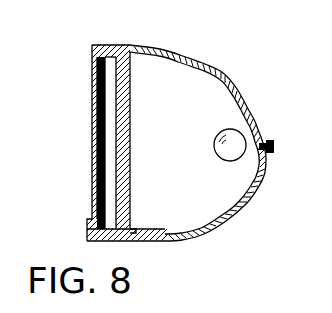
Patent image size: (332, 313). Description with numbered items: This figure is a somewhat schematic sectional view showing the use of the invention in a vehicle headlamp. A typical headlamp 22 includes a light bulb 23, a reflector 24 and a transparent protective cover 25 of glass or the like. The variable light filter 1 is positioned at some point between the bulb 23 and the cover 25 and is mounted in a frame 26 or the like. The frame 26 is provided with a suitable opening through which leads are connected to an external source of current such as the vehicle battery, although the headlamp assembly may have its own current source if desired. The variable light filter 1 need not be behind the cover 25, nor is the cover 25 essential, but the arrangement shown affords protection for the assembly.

The variable light filter 1 is at (128, 83).
The headlamp 22 is at (227, 76).
The light bulb 23 is at (222, 157).
The reflector 24 is at (256, 189).
The transparent protective cover 25 is at (92, 122).
The frame 26 is at (264, 139).